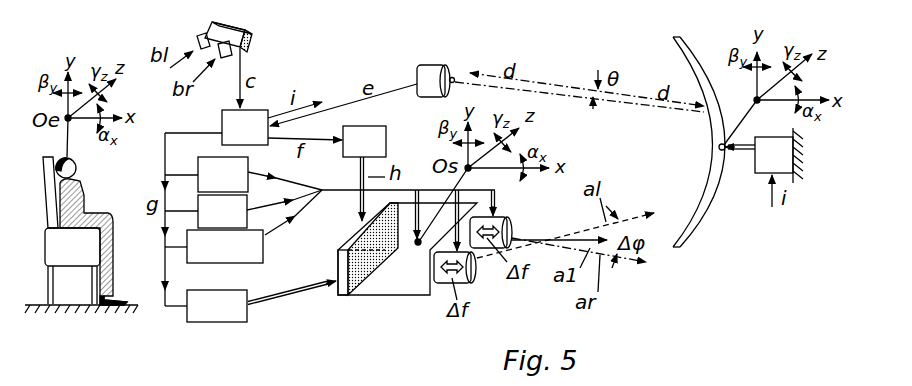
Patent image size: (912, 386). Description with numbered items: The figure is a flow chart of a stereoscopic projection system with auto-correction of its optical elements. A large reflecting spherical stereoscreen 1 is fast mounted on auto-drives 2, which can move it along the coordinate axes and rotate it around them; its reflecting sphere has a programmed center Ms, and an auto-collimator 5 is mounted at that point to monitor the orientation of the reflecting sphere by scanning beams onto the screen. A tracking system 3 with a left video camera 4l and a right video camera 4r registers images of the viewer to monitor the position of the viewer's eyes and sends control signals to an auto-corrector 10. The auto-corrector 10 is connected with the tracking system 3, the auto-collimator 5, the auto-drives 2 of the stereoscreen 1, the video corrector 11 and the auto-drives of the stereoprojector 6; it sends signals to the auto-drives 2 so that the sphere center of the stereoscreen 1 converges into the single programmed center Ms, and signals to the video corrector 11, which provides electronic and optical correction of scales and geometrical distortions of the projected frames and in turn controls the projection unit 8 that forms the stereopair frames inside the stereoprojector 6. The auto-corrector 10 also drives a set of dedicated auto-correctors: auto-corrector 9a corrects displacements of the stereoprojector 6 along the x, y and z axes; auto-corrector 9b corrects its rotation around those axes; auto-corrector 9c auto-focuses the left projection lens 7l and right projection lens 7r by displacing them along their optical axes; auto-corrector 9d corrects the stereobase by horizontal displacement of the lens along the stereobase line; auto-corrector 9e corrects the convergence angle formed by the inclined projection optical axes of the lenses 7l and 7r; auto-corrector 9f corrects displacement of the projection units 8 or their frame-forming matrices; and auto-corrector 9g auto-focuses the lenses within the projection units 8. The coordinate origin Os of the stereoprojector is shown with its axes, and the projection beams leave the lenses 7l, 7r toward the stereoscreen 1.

The reflecting spherical stereoscreen 1 is at (707, 208).
The auto-drives of the stereoscreen 2 is at (764, 155).
The tracking system 3 is at (226, 29).
The left video camera 4l is at (197, 40).
The right video camera 4r is at (234, 50).
The auto-collimator 5 is at (433, 81).
The stereoprojector 6 is at (402, 275).
The right projection lens 7r is at (513, 222).
The left projection lens 7l is at (475, 272).
The projection unit 8 is at (342, 288).
The auto-corrector for stereoprojector displacement 9a is at (223, 174).
The auto-corrector for stereoprojector rotation 9b is at (222, 211).
The auto-corrector for lens auto-focusing 9c is at (237, 246).
The auto-corrector for stereobase 9d is at (237, 246).
The auto-corrector for convergence angle 9e is at (237, 246).
The auto-corrector for projection unit displacement 9f is at (217, 306).
The auto-corrector for projection unit lens auto-focusing 9g is at (217, 306).
The auto-corrector 10 is at (245, 127).
The video corrector 11 is at (364, 141).
The programmed center of the stereoscreen reflecting sphere Ms is at (452, 80).
The projection system origin Os is at (405, 263).